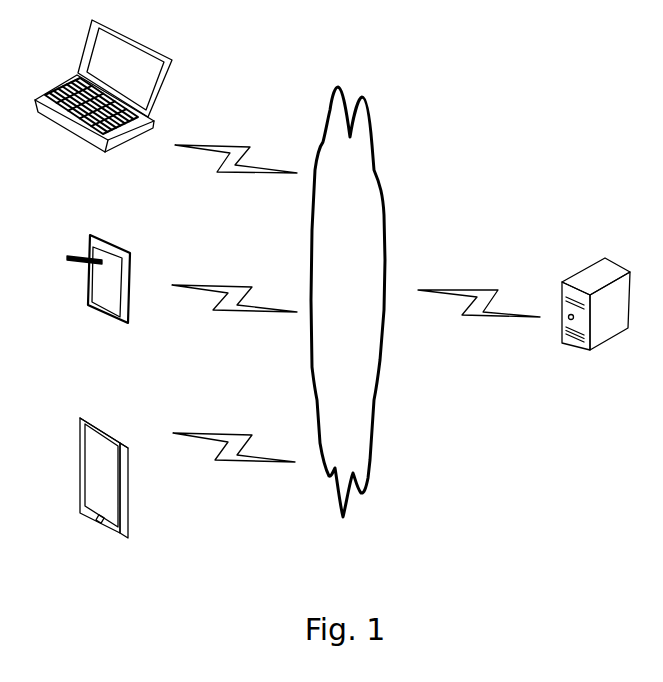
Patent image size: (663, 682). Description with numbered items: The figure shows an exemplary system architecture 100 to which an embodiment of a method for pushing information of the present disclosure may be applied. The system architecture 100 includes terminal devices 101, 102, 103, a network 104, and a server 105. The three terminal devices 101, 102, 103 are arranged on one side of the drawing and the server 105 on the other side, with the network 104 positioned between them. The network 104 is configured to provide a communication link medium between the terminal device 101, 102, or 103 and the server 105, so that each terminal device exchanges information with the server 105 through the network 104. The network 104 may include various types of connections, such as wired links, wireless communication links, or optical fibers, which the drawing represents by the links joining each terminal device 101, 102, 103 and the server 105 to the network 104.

The system architecture 100 is at (622, 70).
The terminal device 101 is at (104, 498).
The terminal device 102 is at (98, 297).
The terminal device 103 is at (103, 103).
The network 104 is at (348, 302).
The server 105 is at (596, 327).